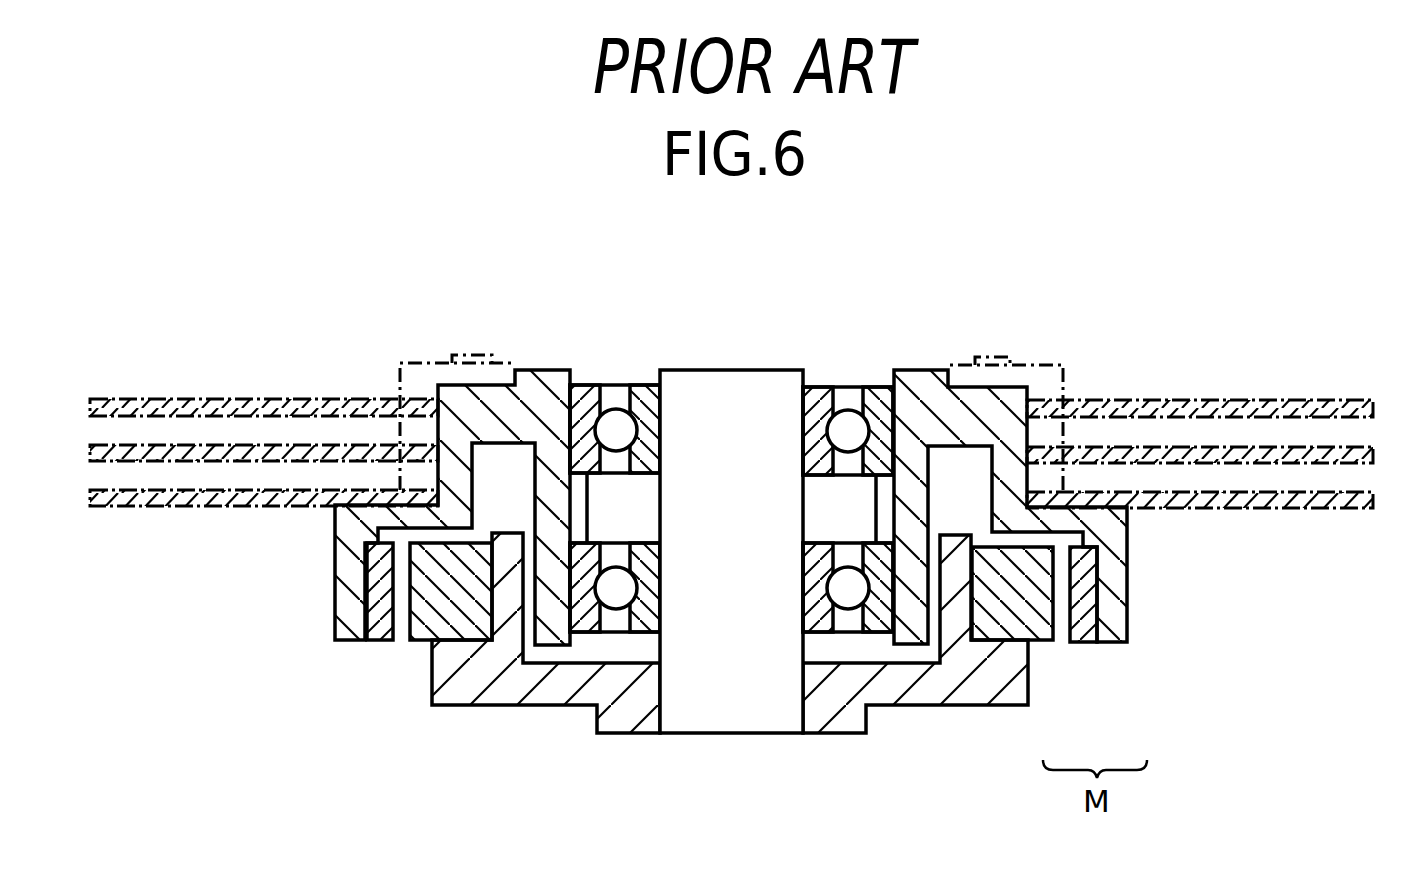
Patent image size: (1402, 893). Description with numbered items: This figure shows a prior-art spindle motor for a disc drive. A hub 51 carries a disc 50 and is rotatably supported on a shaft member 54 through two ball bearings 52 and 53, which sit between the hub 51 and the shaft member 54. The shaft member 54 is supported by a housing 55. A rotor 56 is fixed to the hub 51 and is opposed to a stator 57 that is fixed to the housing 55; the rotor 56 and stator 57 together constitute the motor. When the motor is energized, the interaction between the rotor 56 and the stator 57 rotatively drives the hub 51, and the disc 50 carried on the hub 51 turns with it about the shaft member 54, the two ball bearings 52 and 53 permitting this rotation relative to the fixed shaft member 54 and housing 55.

The disc 50 is at (1300, 398).
The hub 51 is at (1005, 408).
The ball bearing 52 is at (853, 395).
The ball bearing 53 is at (851, 596).
The shaft member 54 is at (720, 383).
The housing 55 is at (503, 688).
The rotor 56 is at (1080, 642).
The stator 57 is at (1033, 642).